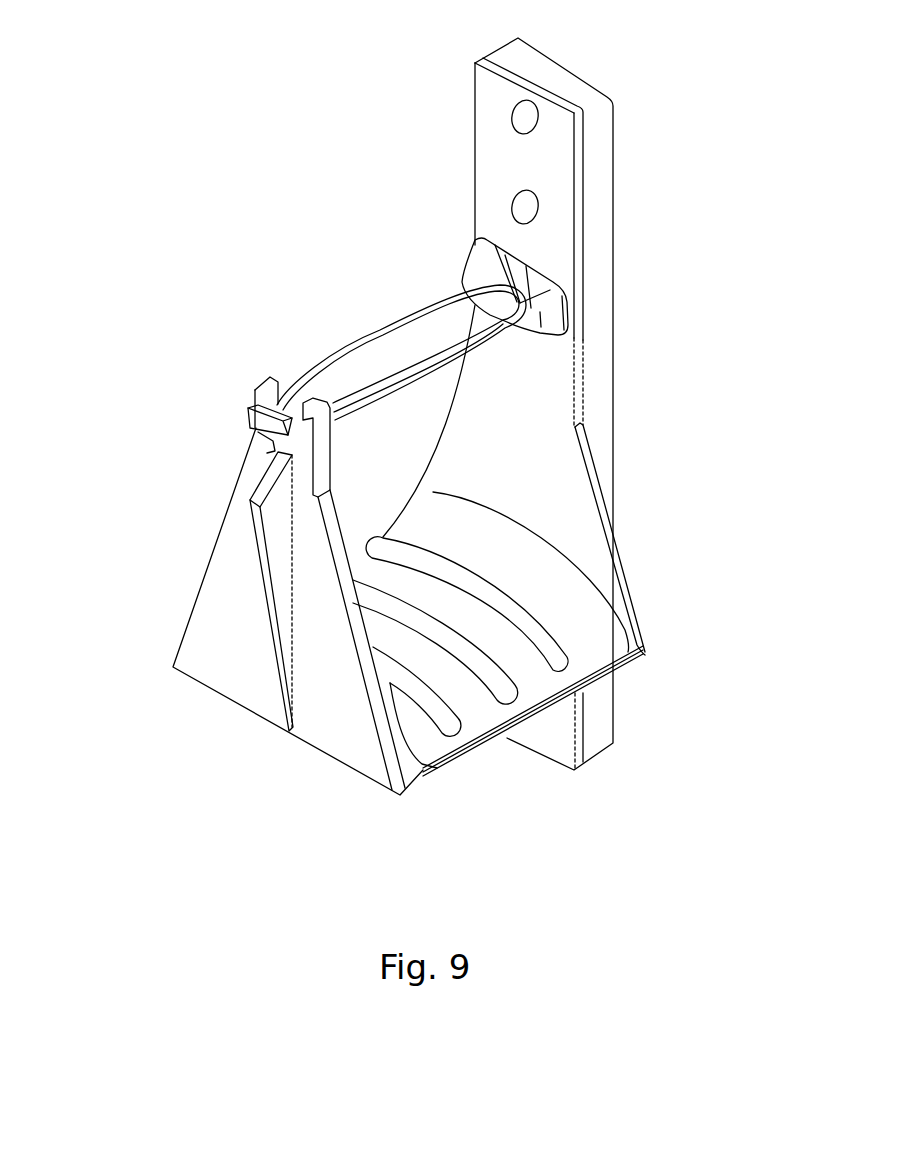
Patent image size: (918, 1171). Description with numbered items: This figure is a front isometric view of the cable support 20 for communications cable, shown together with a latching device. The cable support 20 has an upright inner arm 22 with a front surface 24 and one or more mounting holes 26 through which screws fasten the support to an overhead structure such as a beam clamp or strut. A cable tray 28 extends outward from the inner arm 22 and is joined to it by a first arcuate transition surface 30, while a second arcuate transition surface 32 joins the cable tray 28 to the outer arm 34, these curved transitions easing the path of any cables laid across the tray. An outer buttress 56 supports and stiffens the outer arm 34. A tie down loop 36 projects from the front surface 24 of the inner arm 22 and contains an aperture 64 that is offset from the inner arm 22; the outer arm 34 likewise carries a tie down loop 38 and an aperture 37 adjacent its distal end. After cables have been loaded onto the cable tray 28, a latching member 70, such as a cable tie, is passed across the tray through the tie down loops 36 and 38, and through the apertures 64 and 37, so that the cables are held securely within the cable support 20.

The cable support 20 is at (263, 140).
The inner arm 22 is at (604, 178).
The front surface 24 is at (540, 173).
The mounting holes 26 is at (527, 116).
The cable tray 28 is at (592, 660).
The first arcuate transition surface 30 is at (567, 590).
The second arcuate transition surface 32 is at (451, 727).
The outer arm 34 is at (207, 630).
The tie down loop 36 is at (550, 315).
The aperture 37 is at (268, 446).
The tie down loop 38 is at (331, 426).
The outer buttress 56 is at (258, 552).
The aperture 64 is at (518, 273).
The latching member 70 is at (372, 322).